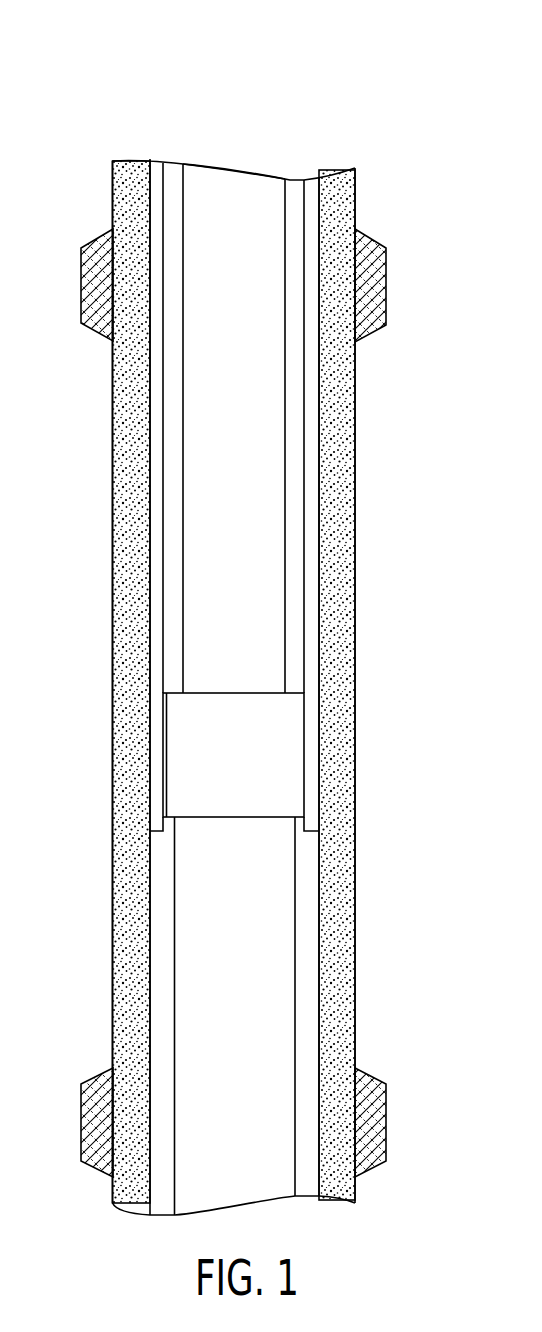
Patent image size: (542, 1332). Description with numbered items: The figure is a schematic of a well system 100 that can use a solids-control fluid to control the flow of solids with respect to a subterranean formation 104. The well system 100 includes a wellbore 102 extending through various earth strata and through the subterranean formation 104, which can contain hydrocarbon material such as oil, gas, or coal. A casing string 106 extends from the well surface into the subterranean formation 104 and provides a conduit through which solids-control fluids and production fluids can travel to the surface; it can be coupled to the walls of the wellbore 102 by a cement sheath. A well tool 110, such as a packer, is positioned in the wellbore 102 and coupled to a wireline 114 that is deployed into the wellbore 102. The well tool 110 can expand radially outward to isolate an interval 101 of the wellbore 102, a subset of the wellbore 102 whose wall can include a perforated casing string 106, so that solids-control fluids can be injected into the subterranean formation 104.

The well system 100 is at (90, 82).
The interval 101 is at (157, 969).
The wellbore 102 is at (147, 623).
The subterranean formation 104 is at (356, 468).
The casing string 106 is at (172, 468).
The well tool 110 is at (177, 766).
The wireline 114 is at (230, 185).